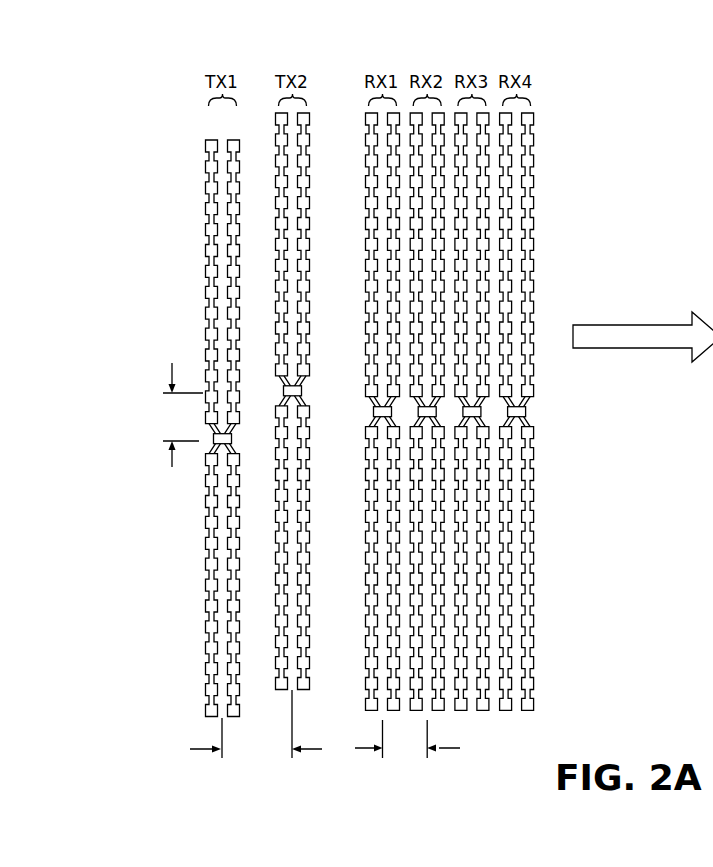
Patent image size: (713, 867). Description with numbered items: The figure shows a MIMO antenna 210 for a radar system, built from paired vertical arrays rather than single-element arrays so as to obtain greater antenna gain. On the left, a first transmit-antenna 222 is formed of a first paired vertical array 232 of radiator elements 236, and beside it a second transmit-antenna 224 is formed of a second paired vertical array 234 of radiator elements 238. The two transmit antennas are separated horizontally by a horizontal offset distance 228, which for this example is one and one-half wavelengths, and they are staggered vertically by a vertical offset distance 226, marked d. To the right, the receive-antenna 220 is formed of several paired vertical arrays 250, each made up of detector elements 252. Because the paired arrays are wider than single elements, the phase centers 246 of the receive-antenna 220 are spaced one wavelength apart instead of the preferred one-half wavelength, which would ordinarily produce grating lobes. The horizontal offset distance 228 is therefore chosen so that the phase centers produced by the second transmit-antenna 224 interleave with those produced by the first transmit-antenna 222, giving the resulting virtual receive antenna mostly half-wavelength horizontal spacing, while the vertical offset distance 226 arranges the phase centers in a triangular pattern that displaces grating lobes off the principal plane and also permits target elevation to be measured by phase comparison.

The MIMO antenna 210 is at (158, 116).
The receive-antenna 220 is at (537, 767).
The first transmit-antenna 222 is at (207, 655).
The second transmit-antenna 224 is at (272, 607).
The vertical offset distance 226 is at (170, 369).
The horizontal offset distance 228 is at (200, 750).
The first paired vertical array 232 is at (205, 229).
The second paired vertical array 234 is at (272, 291).
The radiator elements 236 is at (225, 528).
The radiator elements 238 is at (303, 570).
The phase centers 246 is at (384, 417).
The paired vertical arrays 250 is at (528, 697).
The detector elements 252 is at (527, 639).